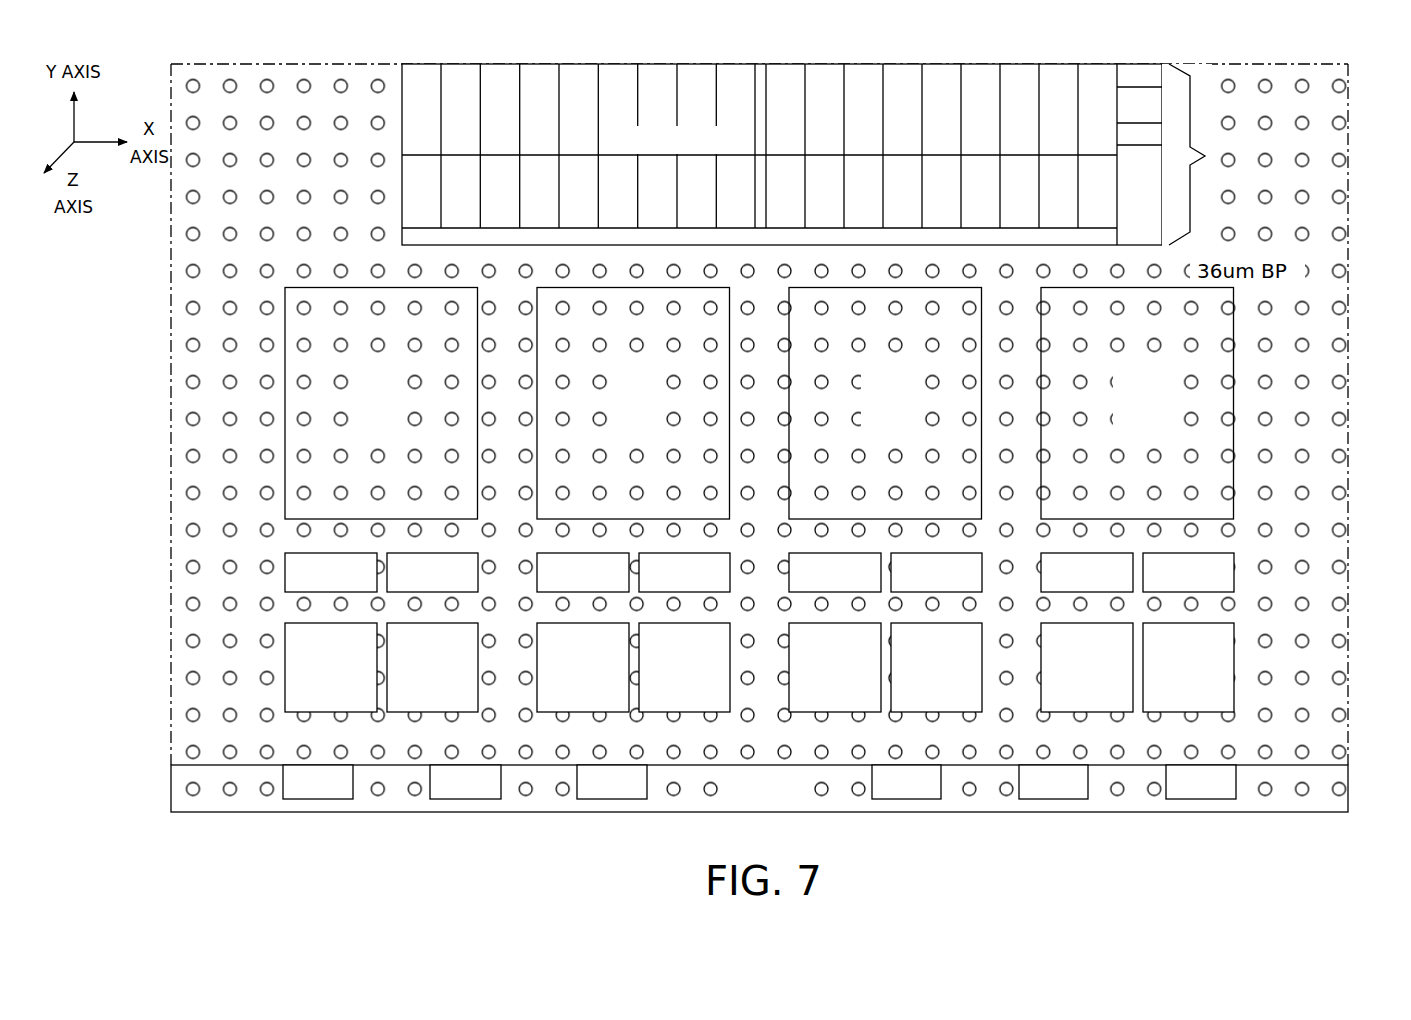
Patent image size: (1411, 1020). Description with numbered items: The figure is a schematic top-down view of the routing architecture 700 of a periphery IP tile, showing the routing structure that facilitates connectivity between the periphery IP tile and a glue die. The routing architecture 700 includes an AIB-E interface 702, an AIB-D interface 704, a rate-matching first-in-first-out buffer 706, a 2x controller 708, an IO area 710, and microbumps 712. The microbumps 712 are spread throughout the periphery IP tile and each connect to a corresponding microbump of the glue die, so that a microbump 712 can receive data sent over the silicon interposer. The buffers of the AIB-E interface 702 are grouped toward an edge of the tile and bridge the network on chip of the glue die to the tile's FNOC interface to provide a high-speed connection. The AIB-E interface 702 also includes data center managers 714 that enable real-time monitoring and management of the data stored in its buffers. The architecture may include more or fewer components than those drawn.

The routing architecture 700 is at (284, 62).
The AIB-E interface 702 is at (1330, 773).
The AIB-D interface 704 is at (1235, 670).
The rate-matching first-in-first-out buffer 706 is at (1236, 570).
The 2x controller 708 is at (1233, 403).
The IO area 710 is at (828, 157).
The microbumps 712 is at (1310, 192).
The data center managers 714 is at (1053, 799).